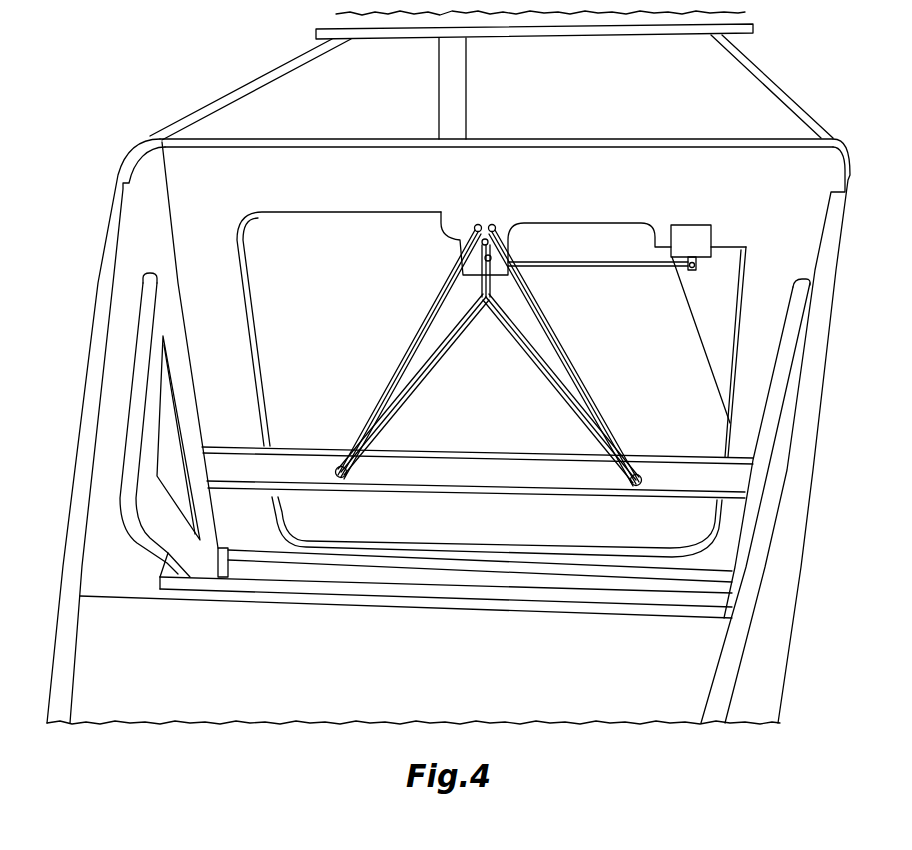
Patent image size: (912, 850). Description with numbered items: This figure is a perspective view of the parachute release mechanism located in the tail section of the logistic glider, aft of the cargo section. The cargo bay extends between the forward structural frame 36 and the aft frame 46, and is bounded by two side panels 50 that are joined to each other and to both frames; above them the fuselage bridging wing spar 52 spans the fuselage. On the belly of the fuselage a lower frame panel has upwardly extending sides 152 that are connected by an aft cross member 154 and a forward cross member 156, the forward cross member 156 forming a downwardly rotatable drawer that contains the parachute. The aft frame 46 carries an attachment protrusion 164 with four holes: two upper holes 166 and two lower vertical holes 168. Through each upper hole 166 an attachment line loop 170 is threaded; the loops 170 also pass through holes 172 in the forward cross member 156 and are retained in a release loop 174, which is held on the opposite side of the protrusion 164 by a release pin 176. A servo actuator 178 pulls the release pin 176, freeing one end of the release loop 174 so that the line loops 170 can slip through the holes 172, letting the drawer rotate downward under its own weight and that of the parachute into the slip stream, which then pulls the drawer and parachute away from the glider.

The fuselage bridging wing spar 52 is at (340, 26).
The forward structural frame 36 is at (459, 72).
The aft frame 46 is at (567, 140).
The side panels 50 is at (353, 120).
The upwardly extending sides 152 is at (155, 395).
The aft cross member 154 is at (462, 590).
The forward cross member 156 is at (474, 453).
The attachment protrusion 164 is at (460, 238).
The upper holes 166 is at (492, 225).
The lower vertical holes 168 is at (491, 257).
The attachment line loops 170 is at (404, 350).
The holes in the forward cross member 172 is at (341, 478).
The release loop 174 is at (491, 296).
The release pin 176 is at (635, 268).
The servo actuator 178 is at (693, 232).